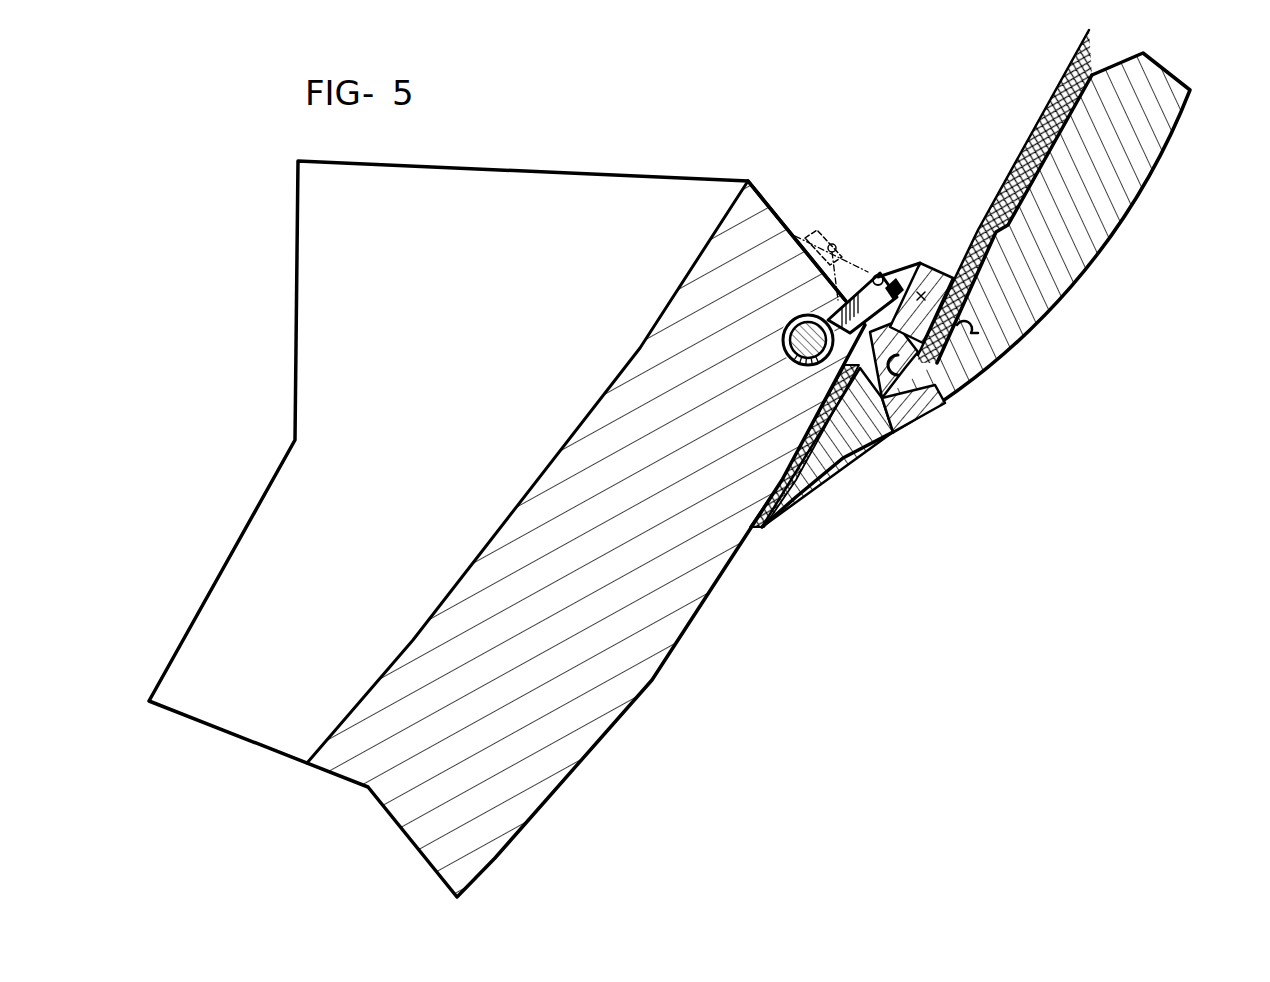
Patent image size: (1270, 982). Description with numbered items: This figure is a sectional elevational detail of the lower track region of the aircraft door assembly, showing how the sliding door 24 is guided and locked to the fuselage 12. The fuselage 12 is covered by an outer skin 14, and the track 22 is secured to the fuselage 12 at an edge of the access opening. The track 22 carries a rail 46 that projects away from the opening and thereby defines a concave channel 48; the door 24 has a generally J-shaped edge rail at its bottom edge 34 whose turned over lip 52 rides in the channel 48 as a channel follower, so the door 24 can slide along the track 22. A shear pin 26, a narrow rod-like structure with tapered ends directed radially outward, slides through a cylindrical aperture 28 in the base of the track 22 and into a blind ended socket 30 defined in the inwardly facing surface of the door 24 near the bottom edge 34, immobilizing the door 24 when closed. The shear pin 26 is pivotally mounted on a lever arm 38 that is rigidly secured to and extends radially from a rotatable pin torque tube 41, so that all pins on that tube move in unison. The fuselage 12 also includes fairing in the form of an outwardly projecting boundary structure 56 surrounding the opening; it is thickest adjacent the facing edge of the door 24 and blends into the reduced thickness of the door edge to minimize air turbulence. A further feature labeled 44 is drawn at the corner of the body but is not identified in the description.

The fuselage 12 is at (626, 703).
The outer skin 14 is at (685, 590).
The track 22 is at (952, 270).
The door 24 is at (1147, 186).
The shear pin 26 is at (886, 265).
The cylindrical aperture 28 is at (919, 262).
The blind ended socket 30 is at (980, 334).
The bottom edge 34 is at (920, 428).
The lever arm 38 is at (822, 290).
The pin torque tube 41 is at (782, 334).
The chamfer edge 44 is at (762, 192).
The rail 46 is at (920, 372).
The concave channel 48 is at (947, 400).
The turned over lip 52 is at (868, 372).
The boundary structure 56 is at (863, 446).